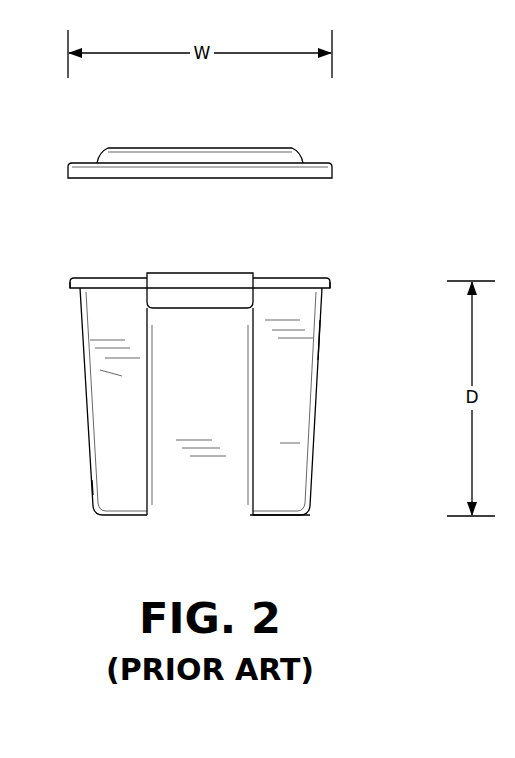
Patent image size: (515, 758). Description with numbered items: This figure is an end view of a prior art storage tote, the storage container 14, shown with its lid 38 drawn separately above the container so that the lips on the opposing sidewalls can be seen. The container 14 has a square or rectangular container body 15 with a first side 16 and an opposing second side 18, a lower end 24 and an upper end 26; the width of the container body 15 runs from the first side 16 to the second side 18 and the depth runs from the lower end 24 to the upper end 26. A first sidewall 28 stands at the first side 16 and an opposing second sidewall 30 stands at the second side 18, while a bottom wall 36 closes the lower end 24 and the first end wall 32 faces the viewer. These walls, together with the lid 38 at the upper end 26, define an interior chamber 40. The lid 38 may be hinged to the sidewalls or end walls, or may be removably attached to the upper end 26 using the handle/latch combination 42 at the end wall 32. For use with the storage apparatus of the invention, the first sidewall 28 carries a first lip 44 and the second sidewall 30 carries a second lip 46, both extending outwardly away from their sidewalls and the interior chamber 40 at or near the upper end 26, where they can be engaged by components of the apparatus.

The storage container 14 is at (250, 121).
The lid 38 is at (225, 157).
The interior chamber 40 is at (209, 388).
The handle/latch combination 42 is at (224, 298).
The first lip 44 is at (75, 283).
The second lip 46 is at (328, 291).
The upper end 26 is at (340, 282).
The second sidewall 30 is at (320, 350).
The container body 15 is at (118, 378).
The first side 16 is at (73, 420).
The second side 18 is at (330, 407).
The first end wall 32 is at (287, 443).
The first sidewall 28 is at (92, 485).
The lower end 24 is at (318, 520).
The bottom wall 36 is at (175, 515).